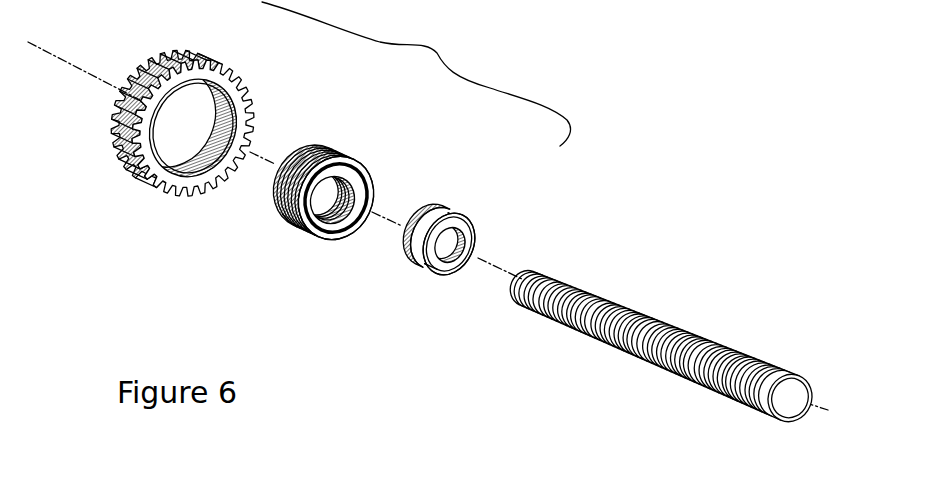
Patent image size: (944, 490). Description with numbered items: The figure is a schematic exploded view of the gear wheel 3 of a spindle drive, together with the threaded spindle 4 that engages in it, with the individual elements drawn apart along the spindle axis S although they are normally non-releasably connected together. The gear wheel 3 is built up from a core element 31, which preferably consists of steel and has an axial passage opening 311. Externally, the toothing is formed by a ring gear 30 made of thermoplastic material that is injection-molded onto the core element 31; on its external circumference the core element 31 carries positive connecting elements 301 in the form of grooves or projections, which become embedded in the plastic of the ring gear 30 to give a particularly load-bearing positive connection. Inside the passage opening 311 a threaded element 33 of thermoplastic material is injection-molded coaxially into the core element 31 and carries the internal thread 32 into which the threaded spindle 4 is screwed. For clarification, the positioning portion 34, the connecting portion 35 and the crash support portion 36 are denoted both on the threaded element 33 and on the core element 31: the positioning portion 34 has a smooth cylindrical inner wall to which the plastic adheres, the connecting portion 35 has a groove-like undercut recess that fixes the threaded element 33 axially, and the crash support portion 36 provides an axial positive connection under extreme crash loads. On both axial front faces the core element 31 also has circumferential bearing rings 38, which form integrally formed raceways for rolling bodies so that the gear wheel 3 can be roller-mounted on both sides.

The gear wheel 3 is at (423, 38).
The threaded spindle 4 is at (697, 338).
The ring gear 30 is at (215, 63).
The positive connecting elements 301 is at (307, 148).
The core element 31 is at (302, 164).
The axial passage opening 311 is at (348, 197).
The internal thread 32 is at (486, 222).
The threaded element 33 is at (450, 213).
The positioning portion 34 is at (428, 277).
The connecting portion 35 is at (417, 262).
The crash support portion 36 is at (402, 238).
The circumferential bearing rings 38 is at (280, 207).
The spindle axis S is at (823, 412).